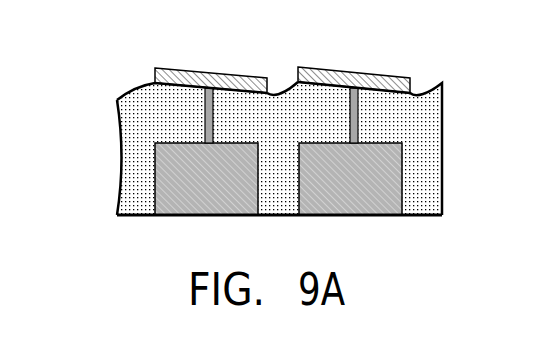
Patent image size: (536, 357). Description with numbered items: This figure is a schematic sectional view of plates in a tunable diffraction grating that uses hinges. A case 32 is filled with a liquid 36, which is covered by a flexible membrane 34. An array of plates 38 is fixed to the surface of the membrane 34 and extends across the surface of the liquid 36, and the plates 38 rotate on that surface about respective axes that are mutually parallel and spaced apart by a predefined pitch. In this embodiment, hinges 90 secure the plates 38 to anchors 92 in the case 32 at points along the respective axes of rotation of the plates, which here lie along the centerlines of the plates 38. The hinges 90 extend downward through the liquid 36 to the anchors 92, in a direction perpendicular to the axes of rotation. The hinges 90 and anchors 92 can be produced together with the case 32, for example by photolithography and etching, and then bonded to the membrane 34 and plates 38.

The case 32 is at (128, 217).
The flexible membrane 34 is at (284, 89).
The liquid 36 is at (127, 143).
The plates 38 is at (193, 68).
The hinges 90 is at (207, 121).
The anchors 92 is at (183, 201).